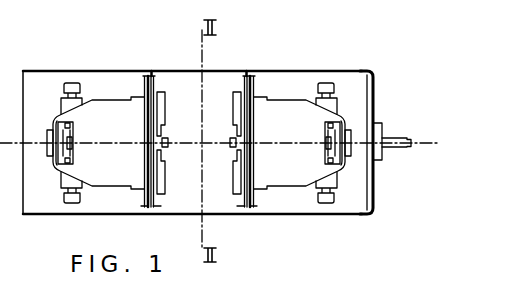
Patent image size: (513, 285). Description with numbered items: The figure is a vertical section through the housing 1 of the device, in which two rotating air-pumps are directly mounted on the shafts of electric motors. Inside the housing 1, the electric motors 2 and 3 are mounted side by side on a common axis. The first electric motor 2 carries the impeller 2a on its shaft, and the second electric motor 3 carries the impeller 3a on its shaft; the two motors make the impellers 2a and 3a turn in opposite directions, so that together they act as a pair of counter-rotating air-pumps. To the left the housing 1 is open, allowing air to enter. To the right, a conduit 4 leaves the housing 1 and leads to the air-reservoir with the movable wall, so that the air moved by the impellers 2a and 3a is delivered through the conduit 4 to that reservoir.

The housing 1 is at (166, 71).
The electric motor 2 is at (108, 107).
The impeller 2a is at (161, 107).
The electric motor 3 is at (287, 107).
The impeller 3a is at (236, 172).
The conduit 4 is at (392, 133).